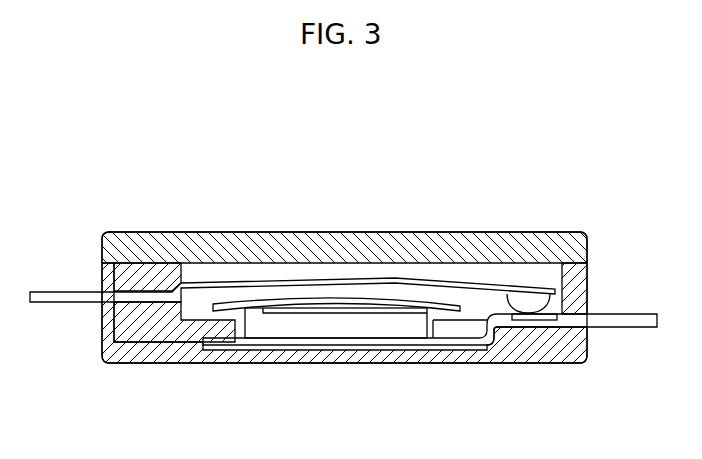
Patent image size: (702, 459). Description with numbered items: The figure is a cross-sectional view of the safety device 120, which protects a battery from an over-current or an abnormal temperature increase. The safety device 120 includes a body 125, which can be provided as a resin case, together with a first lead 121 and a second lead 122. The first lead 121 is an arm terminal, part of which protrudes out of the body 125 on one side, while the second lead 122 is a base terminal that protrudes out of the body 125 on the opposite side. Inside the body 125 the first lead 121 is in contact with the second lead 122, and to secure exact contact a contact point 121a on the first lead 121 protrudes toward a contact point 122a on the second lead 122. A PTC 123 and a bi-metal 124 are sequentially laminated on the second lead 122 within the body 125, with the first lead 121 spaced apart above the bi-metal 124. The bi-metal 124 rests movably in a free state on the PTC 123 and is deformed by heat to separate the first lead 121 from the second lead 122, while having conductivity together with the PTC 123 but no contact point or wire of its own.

The safety device 120 is at (178, 206).
The first lead 121 is at (80, 291).
The contact point 121a is at (531, 296).
The second lead 122 is at (620, 317).
The contact point 122a is at (536, 323).
The PTC 123 is at (410, 326).
The bi-metal 124 is at (425, 292).
The body 125 is at (333, 246).